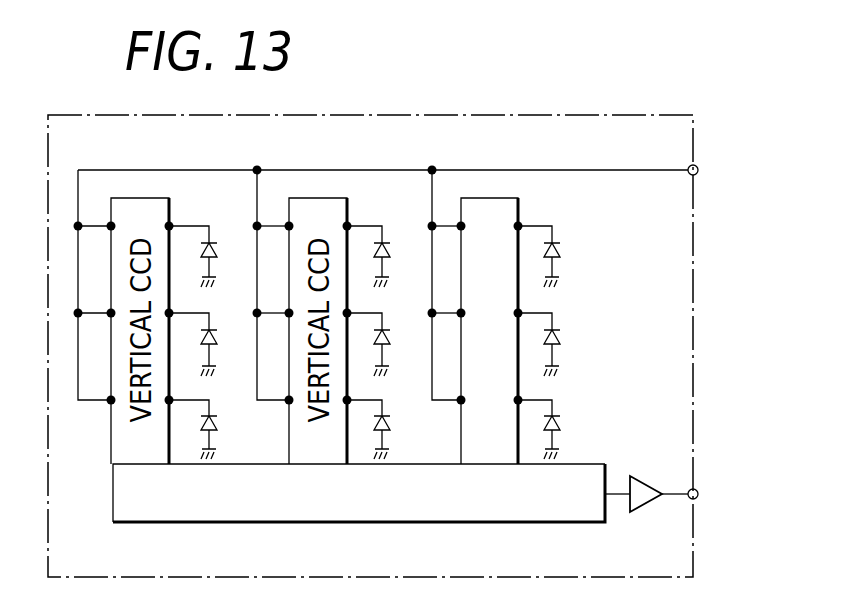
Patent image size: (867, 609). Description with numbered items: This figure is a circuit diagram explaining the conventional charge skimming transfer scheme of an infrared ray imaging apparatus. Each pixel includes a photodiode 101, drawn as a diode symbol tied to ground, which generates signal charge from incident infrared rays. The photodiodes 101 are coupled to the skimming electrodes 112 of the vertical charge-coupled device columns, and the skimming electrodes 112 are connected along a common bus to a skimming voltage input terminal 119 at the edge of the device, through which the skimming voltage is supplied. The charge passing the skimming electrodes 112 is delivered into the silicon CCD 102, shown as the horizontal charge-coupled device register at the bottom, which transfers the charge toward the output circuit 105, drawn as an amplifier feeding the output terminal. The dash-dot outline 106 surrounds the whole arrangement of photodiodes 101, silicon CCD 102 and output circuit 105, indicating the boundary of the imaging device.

The photodiode 101 is at (562, 250).
The silicon CCD 102 is at (483, 523).
The output circuit 105 is at (643, 478).
The semiconductor substrate 106 is at (695, 355).
The skimming electrode 112 is at (461, 226).
The skimming voltage input terminal 119 is at (697, 164).